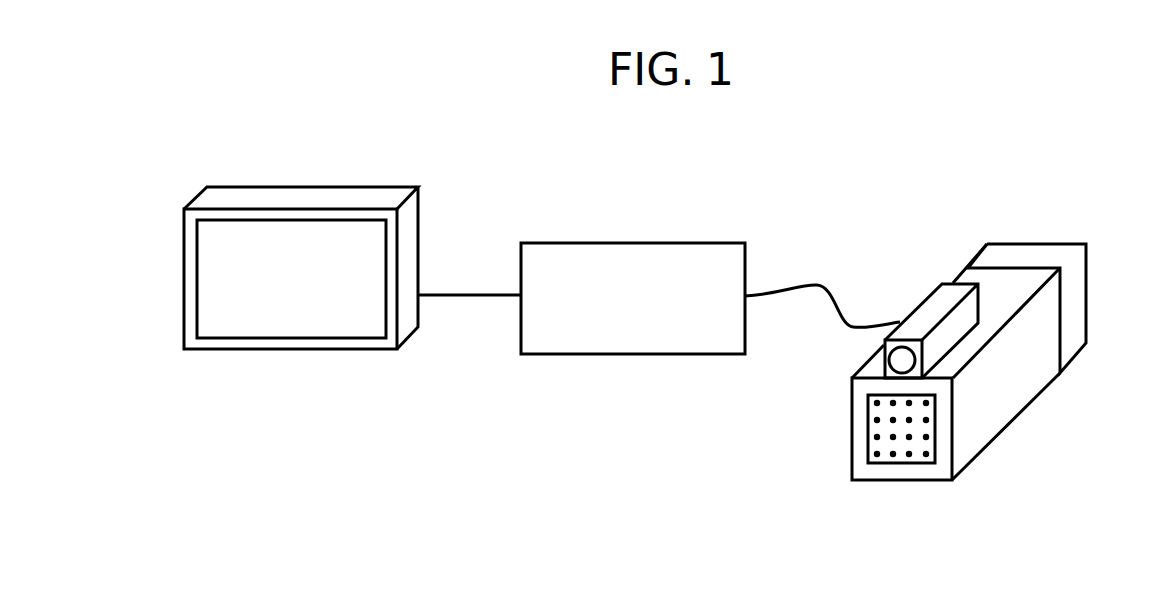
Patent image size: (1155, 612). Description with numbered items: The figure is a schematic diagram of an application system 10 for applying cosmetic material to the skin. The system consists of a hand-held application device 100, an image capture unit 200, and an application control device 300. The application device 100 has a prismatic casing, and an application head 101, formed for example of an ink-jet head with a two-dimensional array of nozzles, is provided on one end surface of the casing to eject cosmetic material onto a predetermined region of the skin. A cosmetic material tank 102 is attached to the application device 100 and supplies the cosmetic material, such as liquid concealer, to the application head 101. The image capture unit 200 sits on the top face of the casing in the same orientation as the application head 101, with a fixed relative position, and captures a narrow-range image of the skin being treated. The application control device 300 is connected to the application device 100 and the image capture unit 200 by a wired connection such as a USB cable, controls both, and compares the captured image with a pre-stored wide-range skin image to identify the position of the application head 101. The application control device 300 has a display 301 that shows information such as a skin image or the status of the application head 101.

The application system 10 is at (1077, 86).
The application device 100 is at (1020, 417).
The application head 101 is at (897, 456).
The cosmetic material tank 102 is at (1058, 244).
The image capture unit 200 is at (883, 348).
The application control device 300 is at (663, 243).
The display 301 is at (383, 185).